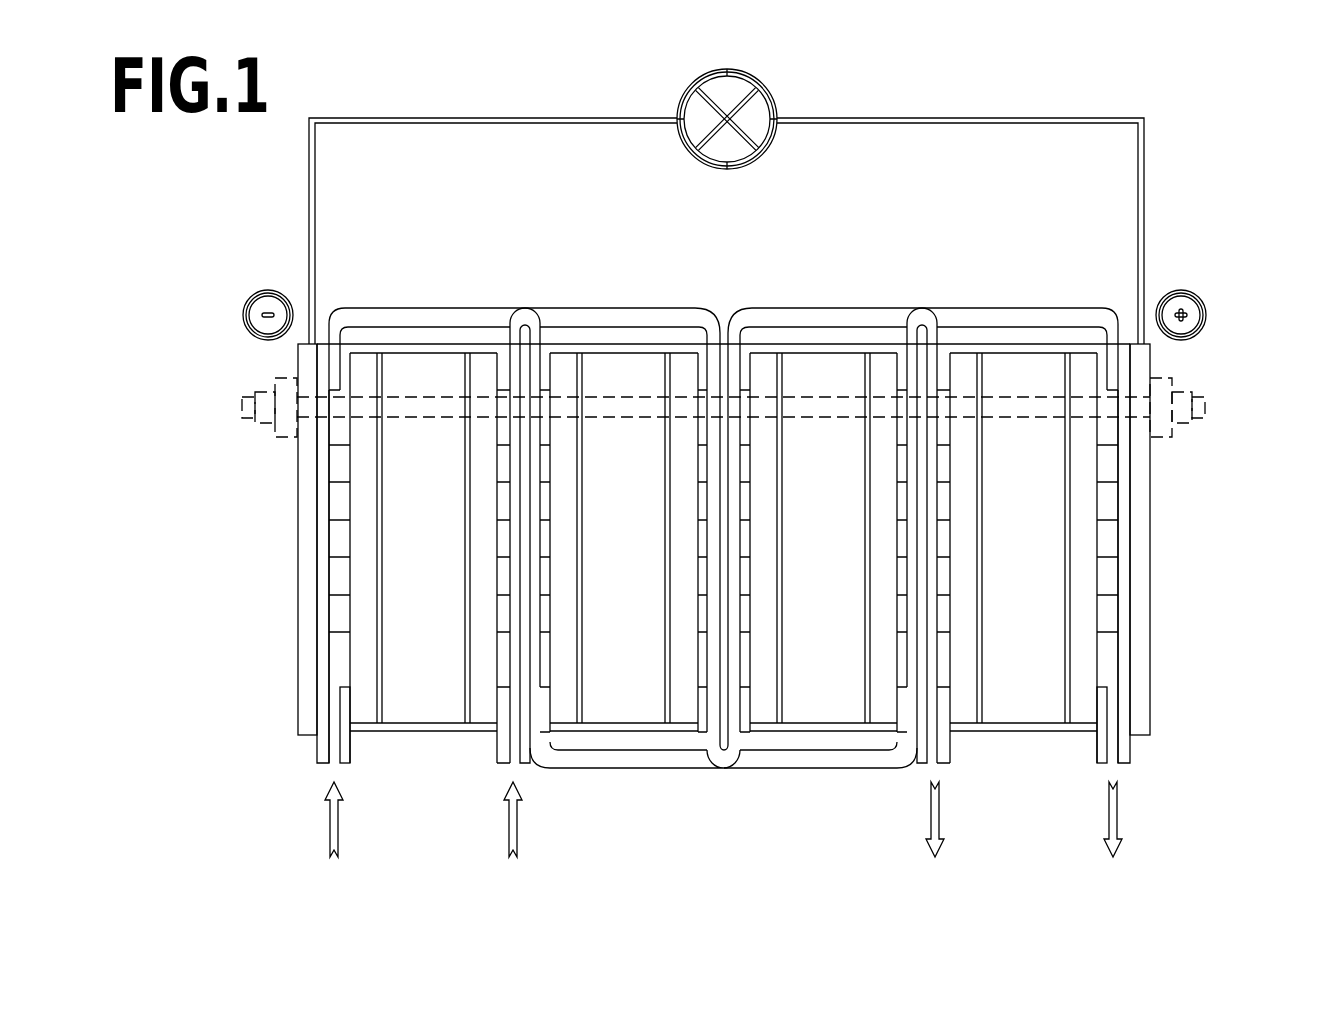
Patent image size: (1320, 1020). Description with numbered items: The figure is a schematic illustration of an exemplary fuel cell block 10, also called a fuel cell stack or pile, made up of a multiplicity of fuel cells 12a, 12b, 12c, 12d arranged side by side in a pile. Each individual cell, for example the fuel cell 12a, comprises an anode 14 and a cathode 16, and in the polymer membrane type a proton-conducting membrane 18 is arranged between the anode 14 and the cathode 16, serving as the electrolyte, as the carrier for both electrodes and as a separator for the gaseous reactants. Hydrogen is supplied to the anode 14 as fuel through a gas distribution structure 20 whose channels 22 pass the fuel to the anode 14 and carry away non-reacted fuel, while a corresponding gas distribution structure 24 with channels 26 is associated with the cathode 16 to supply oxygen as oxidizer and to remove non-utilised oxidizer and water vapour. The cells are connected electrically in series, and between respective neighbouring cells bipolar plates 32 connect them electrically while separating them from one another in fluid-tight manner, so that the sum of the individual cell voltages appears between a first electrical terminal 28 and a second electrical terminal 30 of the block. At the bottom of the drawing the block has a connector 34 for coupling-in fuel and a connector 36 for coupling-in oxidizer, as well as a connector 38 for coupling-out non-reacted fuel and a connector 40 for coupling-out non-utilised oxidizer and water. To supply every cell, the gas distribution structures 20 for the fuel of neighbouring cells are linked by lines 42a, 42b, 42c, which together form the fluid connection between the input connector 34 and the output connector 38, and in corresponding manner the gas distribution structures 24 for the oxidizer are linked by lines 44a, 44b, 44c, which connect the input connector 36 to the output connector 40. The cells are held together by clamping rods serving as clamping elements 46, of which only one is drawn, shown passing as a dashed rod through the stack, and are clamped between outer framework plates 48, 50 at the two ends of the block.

The fuel cell block 10 is at (1178, 508).
The fuel cell 12a is at (448, 569).
The fuel cell 12b is at (608, 785).
The fuel cell 12c is at (835, 783).
The fuel cell 12d is at (1040, 760).
The anode 14 is at (362, 653).
The cathode 16 is at (482, 362).
The proton-conducting membrane 18 is at (407, 370).
The gas distribution structure 20 is at (286, 558).
The channels 22 is at (338, 578).
The gas distribution structure 24 is at (472, 593).
The channels 26 is at (512, 575).
The first electrical terminal 28 is at (298, 345).
The second electrical terminal 30 is at (1145, 347).
The bipolar plate 32 is at (525, 370).
The connector 34 is at (328, 765).
The connector 36 is at (506, 763).
The connector 38 is at (938, 766).
The connector 40 is at (1119, 766).
The line 42a is at (437, 315).
The line 42b is at (632, 768).
The line 42c is at (835, 315).
The line 44a is at (662, 315).
The line 44b is at (788, 768).
The line 44c is at (1015, 318).
The clamping element 46 is at (1038, 414).
The outer framework plate 48 is at (258, 512).
The outer framework plate 50 is at (1193, 512).